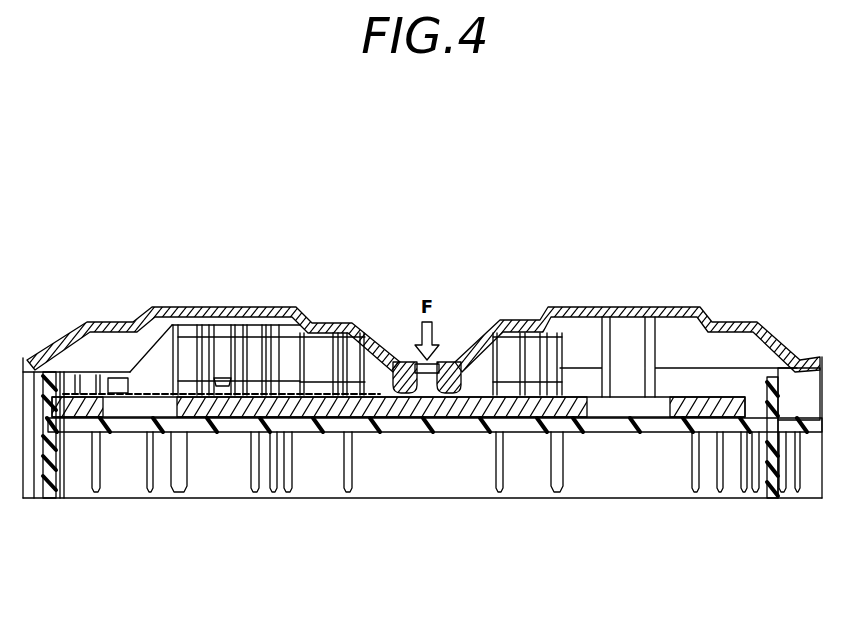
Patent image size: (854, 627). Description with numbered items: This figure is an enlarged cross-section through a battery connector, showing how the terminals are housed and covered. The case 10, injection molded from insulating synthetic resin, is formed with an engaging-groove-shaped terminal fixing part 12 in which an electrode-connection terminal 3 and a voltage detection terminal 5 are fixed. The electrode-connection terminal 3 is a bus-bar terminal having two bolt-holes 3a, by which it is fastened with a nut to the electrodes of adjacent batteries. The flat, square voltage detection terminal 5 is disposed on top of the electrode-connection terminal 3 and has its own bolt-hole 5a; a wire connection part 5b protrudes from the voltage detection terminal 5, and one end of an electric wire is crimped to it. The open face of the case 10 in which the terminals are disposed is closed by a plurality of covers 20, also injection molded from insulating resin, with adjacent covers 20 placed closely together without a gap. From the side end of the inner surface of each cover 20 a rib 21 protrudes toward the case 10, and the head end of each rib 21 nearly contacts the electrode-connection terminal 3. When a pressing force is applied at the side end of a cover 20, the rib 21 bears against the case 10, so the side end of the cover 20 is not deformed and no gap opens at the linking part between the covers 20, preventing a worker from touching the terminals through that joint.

The electrode-connection terminal 3 is at (437, 412).
The bolt-hole 3a is at (258, 420).
The voltage detection terminal 5 is at (284, 392).
The bolt-hole 5a is at (252, 392).
The wire connection part 5b is at (145, 383).
The case 10 is at (618, 425).
The terminal fixing part 12 is at (725, 423).
The cover 20 is at (232, 307).
The rib 21 is at (402, 378).